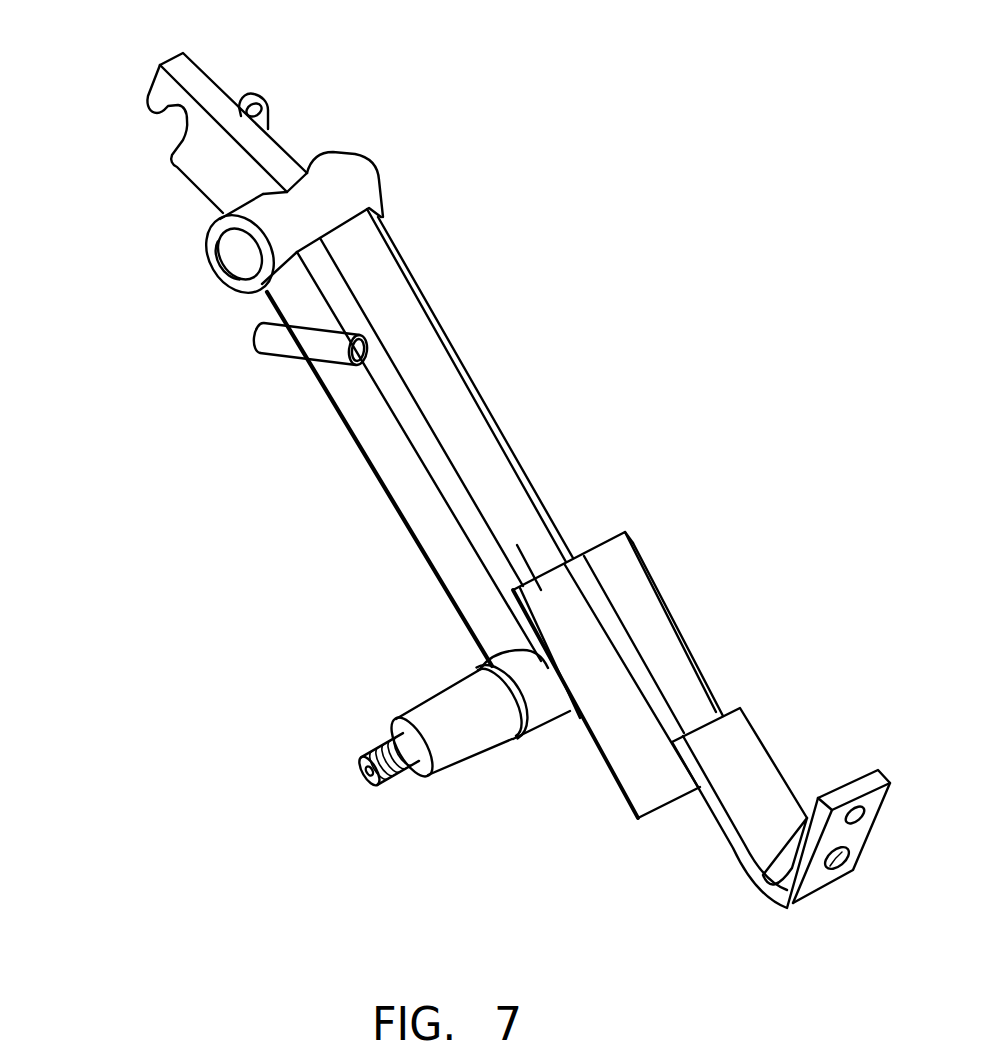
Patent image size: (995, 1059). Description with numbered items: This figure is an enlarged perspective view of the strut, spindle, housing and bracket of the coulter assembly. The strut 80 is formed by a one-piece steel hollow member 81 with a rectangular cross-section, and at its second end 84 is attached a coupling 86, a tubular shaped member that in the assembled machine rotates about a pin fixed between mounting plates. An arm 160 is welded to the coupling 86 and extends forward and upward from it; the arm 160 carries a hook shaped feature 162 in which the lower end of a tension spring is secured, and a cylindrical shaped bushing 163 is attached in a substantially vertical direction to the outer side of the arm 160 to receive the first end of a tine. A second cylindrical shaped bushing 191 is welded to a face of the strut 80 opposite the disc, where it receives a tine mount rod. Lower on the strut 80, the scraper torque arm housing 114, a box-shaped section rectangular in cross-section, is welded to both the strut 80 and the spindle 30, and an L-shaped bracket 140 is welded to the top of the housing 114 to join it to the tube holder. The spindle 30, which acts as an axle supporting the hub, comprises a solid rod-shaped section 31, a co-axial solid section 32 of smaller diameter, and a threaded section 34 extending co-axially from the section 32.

The spindle 30 is at (421, 718).
The section 31 is at (560, 719).
The section 32 is at (437, 697).
The threaded section 34 is at (356, 748).
The strut 80 is at (363, 432).
The hollow member 81 is at (396, 432).
The second end 84 is at (349, 235).
The coupling 86 is at (379, 184).
The housing 114 is at (635, 546).
The bracket 140 is at (758, 731).
The arm 160 is at (201, 197).
The hook shaped feature 162 is at (168, 110).
The bushing 163 is at (253, 96).
The bushing 191 is at (257, 352).